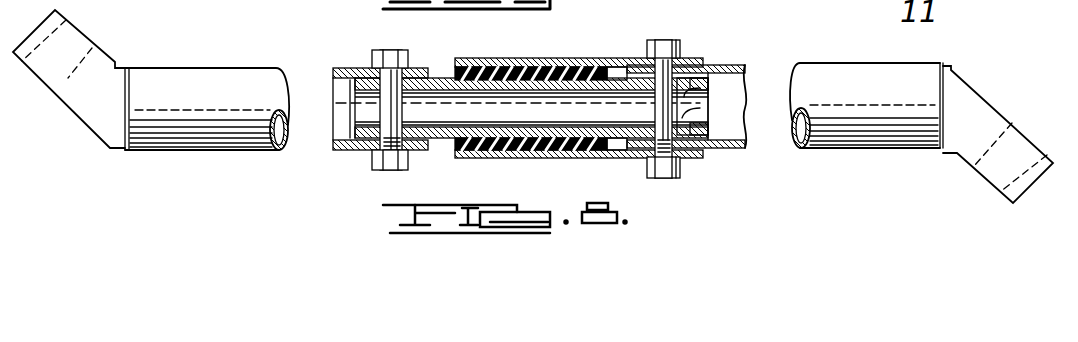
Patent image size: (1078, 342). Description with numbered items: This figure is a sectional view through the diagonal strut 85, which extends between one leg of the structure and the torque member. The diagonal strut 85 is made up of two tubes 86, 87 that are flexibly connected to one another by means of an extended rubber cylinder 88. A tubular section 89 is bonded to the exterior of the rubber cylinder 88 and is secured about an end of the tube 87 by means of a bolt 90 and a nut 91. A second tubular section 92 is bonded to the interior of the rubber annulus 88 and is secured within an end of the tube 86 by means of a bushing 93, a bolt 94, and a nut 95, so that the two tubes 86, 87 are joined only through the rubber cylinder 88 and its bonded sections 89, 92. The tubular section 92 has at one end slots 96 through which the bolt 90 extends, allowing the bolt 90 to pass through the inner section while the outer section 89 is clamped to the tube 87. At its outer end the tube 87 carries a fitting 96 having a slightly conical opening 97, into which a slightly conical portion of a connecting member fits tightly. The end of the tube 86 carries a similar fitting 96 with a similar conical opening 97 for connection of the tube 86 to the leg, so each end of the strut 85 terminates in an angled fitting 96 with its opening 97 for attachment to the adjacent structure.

The diagonal strut 85 is at (238, 62).
The tube 86 is at (217, 150).
The tube 87 is at (722, 62).
The rubber cylinder 88 is at (592, 66).
The tubular section 89 is at (498, 58).
The bolt 90 is at (662, 40).
The nut 91 is at (668, 178).
The tubular section 92 is at (447, 139).
The bushing 93 is at (428, 76).
The bolt 94 is at (406, 50).
The nut 95 is at (390, 171).
The fitting 96 is at (100, 121).
The conical opening 97 is at (67, 79).